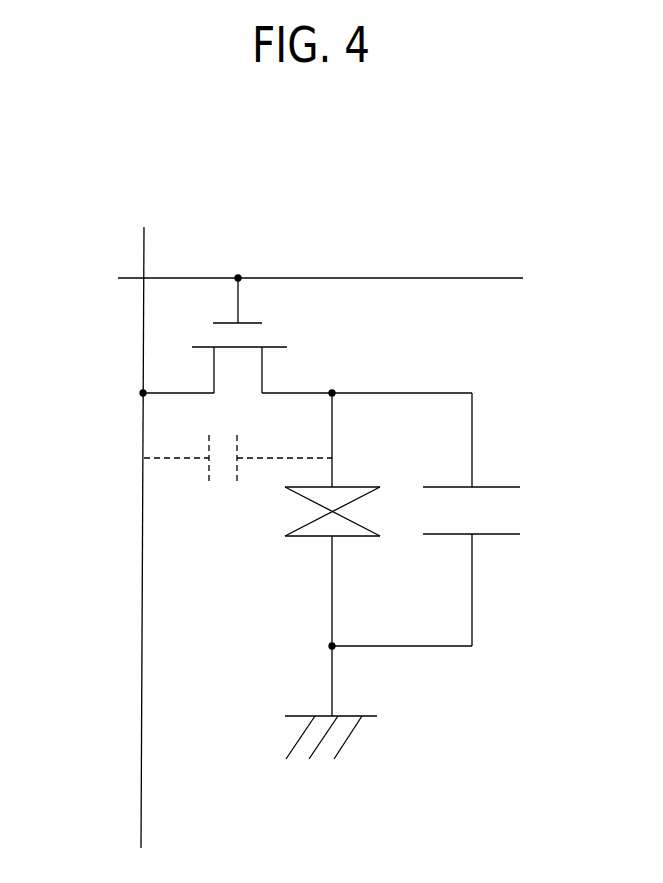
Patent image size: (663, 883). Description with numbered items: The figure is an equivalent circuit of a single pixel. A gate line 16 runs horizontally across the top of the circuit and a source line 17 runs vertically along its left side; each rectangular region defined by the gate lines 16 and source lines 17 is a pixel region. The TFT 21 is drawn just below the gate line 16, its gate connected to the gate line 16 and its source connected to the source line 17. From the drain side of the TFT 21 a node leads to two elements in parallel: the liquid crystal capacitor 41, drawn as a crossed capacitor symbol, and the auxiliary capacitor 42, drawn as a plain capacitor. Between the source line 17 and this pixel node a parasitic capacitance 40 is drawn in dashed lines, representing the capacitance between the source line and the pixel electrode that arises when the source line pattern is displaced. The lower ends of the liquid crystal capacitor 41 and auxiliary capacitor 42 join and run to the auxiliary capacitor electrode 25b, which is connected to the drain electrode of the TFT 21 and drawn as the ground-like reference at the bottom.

The gate line 16 is at (128, 277).
The source line 17 is at (145, 253).
The TFT 21 is at (277, 333).
The parasitic capacitance 40 is at (223, 483).
The liquid crystal capacitor 41 is at (310, 540).
The auxiliary capacitor 42 is at (503, 540).
The auxiliary capacitor electrode 25b is at (348, 716).